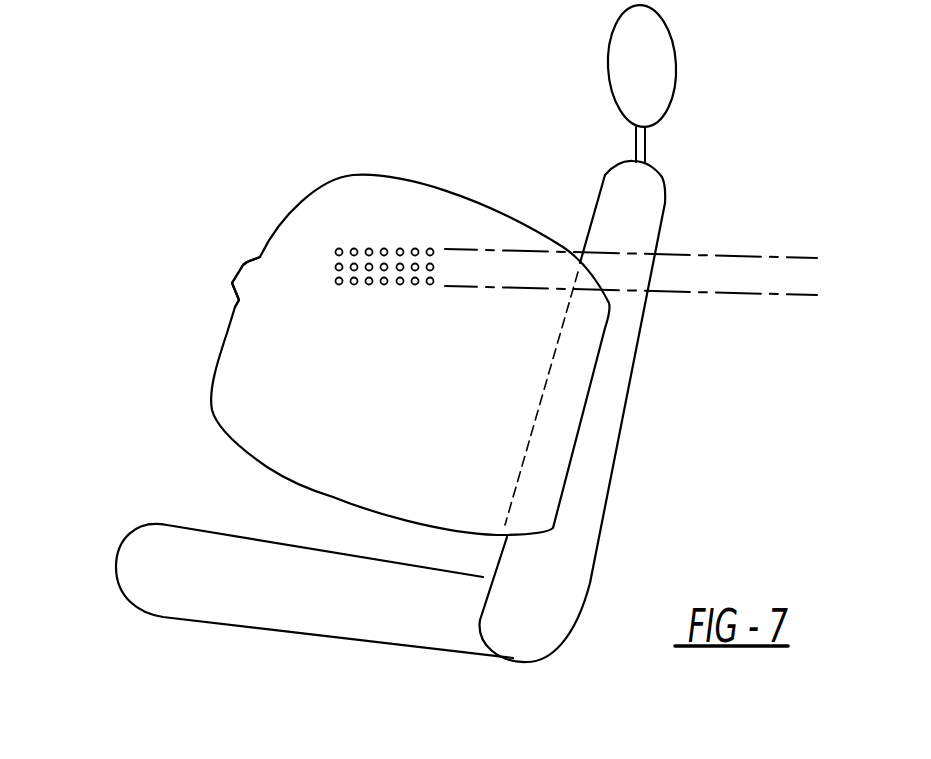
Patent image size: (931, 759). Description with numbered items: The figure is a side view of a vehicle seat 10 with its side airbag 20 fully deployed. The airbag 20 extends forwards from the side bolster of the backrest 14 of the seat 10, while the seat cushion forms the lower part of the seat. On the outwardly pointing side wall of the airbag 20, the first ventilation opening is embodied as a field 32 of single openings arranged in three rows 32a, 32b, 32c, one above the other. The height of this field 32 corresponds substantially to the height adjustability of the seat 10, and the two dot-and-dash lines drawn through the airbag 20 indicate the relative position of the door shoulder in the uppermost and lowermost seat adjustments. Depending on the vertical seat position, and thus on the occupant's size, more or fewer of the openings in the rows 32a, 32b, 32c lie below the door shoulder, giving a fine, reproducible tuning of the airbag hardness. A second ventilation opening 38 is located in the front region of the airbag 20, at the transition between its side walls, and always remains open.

The vehicle seat 10 is at (352, 615).
The backrest 14 is at (617, 392).
The side airbag 20 is at (469, 212).
The field of single openings 32 is at (378, 270).
The first row of single openings 32a is at (336, 250).
The second row of single openings 32b is at (336, 267).
The third row of single openings 32c is at (337, 283).
The second ventilation opening 38 is at (236, 270).